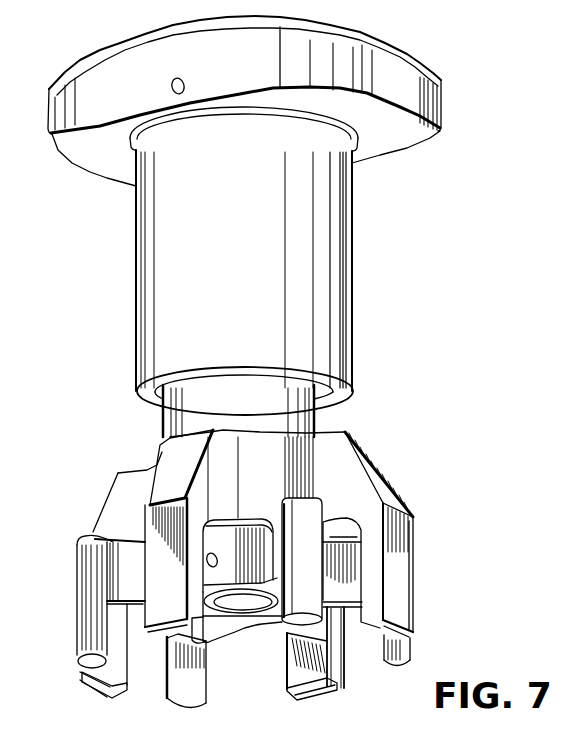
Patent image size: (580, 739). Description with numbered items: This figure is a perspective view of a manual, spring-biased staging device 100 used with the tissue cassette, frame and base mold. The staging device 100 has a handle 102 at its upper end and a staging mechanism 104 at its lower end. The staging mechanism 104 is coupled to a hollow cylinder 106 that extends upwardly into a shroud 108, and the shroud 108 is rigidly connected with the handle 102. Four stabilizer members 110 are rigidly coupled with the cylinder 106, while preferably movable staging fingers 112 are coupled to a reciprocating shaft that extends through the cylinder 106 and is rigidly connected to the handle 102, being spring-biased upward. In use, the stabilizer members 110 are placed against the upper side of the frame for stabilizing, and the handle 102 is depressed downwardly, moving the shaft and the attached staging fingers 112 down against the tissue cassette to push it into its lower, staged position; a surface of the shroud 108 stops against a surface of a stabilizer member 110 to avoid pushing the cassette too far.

The staging device 100 is at (494, 203).
The handle 102 is at (415, 64).
The staging mechanism 104 is at (382, 462).
The hollow cylinder 106 is at (315, 433).
The shroud 108 is at (343, 313).
The stabilizer members 110 is at (400, 580).
The staging fingers 112 is at (413, 655).